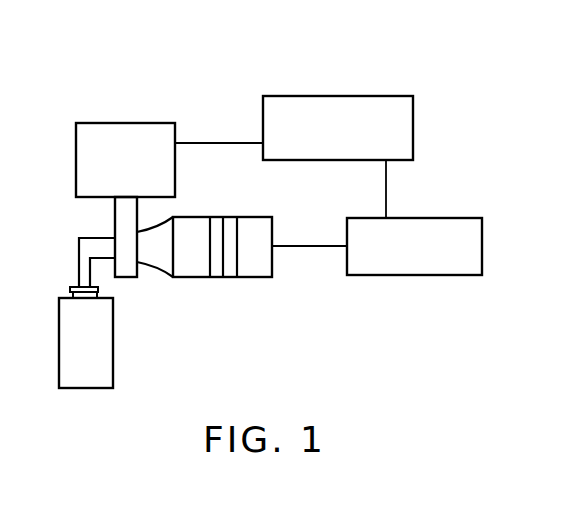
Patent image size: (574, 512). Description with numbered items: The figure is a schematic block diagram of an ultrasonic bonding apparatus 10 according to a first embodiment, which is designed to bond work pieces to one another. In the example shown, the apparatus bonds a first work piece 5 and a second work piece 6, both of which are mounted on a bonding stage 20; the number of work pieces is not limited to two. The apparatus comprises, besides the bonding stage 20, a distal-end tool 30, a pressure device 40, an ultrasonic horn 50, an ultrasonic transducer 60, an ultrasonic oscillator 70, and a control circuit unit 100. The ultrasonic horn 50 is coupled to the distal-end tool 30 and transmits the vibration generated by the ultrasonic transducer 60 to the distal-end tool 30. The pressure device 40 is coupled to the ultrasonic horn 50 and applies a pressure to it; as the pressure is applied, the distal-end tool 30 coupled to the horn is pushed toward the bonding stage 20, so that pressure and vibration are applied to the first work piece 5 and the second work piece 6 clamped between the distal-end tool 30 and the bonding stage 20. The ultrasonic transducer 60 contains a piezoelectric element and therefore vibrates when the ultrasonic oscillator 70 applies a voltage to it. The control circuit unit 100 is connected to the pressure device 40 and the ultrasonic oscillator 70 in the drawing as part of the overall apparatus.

The ultrasonic bonding apparatus 10 is at (410, 69).
The bonding stage 20 is at (106, 296).
The first work piece 5 is at (72, 295).
The second work piece 6 is at (72, 290).
The distal-end tool 30 is at (80, 268).
The pressure device 40 is at (126, 122).
The ultrasonic horn 50 is at (155, 276).
The ultrasonic transducer 60 is at (256, 278).
The ultrasonic oscillator 70 is at (482, 248).
The control circuit unit 100 is at (413, 128).